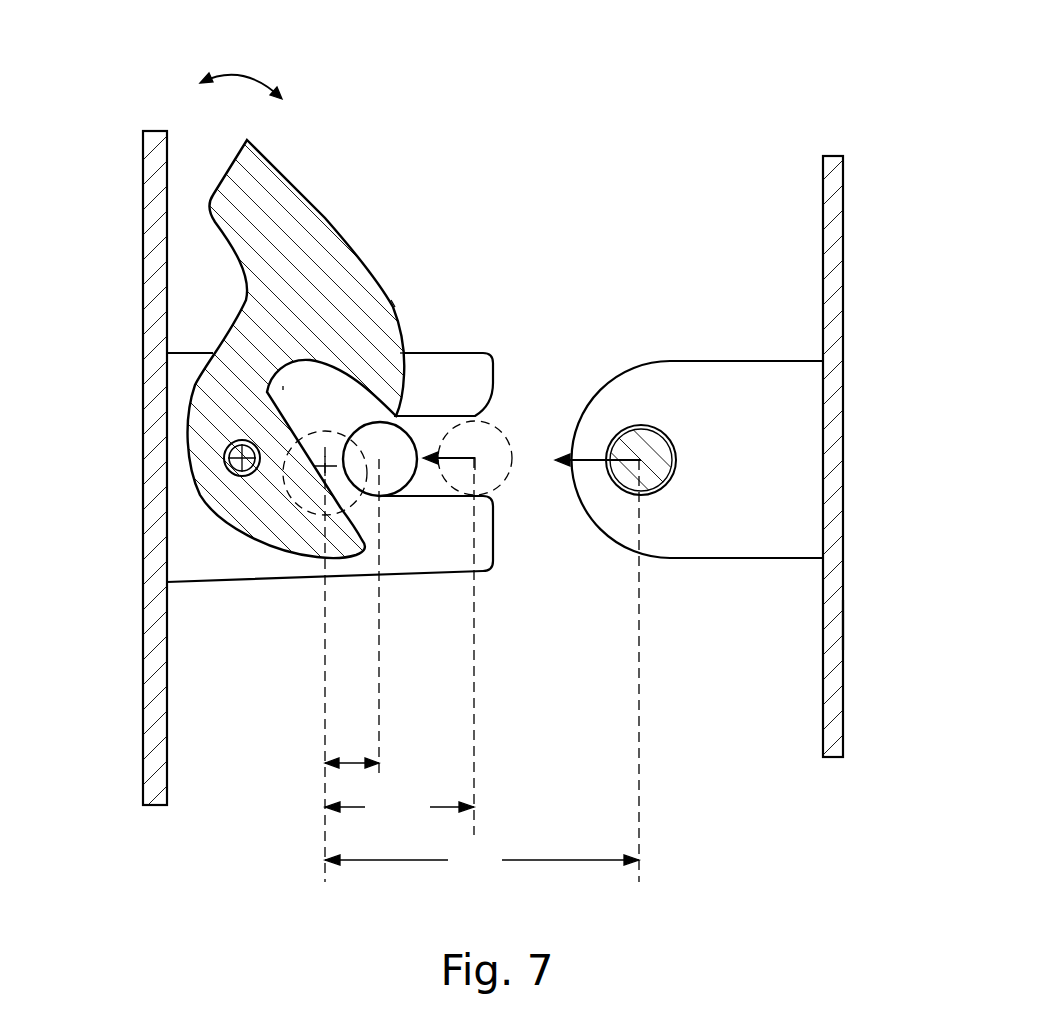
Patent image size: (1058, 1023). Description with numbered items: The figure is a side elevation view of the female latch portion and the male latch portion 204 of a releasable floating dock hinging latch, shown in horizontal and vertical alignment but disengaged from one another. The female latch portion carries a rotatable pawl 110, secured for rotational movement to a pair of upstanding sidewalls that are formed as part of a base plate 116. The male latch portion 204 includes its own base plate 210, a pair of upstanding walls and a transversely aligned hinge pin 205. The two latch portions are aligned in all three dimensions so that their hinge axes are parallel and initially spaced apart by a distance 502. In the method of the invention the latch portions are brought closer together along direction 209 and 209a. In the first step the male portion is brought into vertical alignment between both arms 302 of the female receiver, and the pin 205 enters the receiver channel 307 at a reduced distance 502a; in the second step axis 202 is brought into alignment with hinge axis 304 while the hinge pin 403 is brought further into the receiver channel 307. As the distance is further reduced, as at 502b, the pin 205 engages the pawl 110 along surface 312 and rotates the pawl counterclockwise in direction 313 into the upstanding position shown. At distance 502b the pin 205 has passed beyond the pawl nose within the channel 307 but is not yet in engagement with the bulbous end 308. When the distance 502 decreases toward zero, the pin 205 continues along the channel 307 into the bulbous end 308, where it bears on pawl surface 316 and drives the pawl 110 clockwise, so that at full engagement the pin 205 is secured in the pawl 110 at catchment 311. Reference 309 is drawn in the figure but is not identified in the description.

The rotatable pawl 110 is at (280, 163).
The base plate 116 is at (138, 256).
The axis 202 is at (652, 474).
The male latch portion 204 is at (852, 360).
The hinge pin 205 is at (645, 433).
The direction of engagement 209 is at (574, 450).
The direction of engagement 209a is at (472, 464).
The base plate 210 is at (851, 620).
The arms 302 is at (494, 527).
The hinge axis 304 is at (317, 436).
The receiver channel 307 is at (432, 432).
The bulbous end 308 is at (386, 505).
The contact point 309 is at (403, 353).
The catchment 311 is at (283, 388).
The pawl surface 312 is at (393, 303).
The direction of pawl rotation 313 is at (241, 74).
The pawl surface 316 is at (368, 527).
The hinge pin 403 is at (406, 433).
The distance between axes 502 is at (482, 664).
The reduced distance 502a is at (399, 646).
The further reduced distance 502b is at (351, 618).